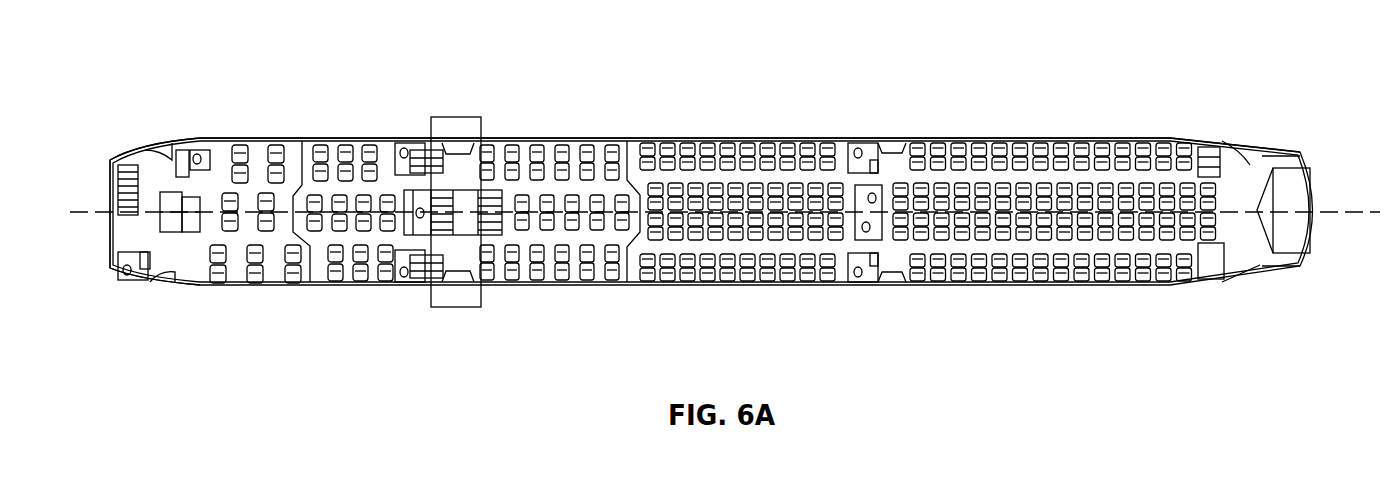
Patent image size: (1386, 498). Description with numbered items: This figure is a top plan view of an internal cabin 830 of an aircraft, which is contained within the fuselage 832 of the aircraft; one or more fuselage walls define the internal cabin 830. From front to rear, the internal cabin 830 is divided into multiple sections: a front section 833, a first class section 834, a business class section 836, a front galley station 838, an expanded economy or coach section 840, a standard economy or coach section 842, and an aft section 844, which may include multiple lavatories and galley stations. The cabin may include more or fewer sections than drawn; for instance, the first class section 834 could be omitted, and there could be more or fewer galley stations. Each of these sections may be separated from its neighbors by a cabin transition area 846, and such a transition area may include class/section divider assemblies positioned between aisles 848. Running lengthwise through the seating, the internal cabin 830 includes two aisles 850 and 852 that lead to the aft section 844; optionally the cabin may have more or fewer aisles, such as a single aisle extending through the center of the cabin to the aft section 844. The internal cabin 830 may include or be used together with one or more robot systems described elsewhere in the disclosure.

The internal cabin 830 is at (247, 48).
The fuselage 832 is at (578, 70).
The front section 833 is at (170, 297).
The first class section 834 is at (265, 285).
The business class section 836 is at (340, 140).
The front galley station 838 is at (456, 306).
The expanded economy or coach section 840 is at (556, 285).
The standard economy or coach section 842 is at (685, 138).
The aft section 844 is at (1250, 160).
The cabin transition area 846 is at (187, 140).
The aisles 848 is at (412, 146).
The aisle 850 is at (1043, 183).
The aisle 852 is at (1063, 245).